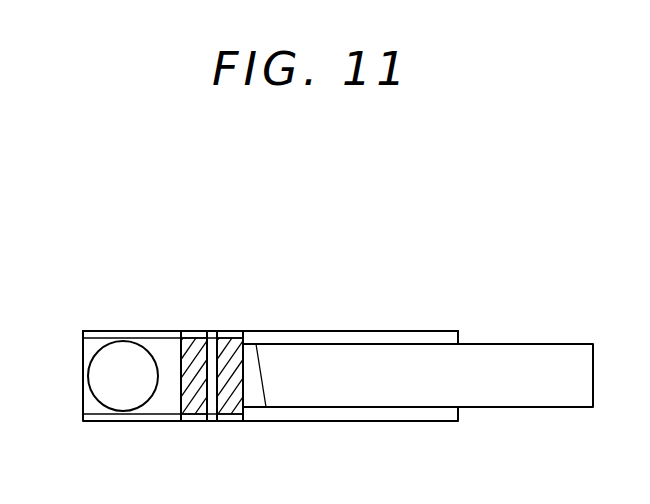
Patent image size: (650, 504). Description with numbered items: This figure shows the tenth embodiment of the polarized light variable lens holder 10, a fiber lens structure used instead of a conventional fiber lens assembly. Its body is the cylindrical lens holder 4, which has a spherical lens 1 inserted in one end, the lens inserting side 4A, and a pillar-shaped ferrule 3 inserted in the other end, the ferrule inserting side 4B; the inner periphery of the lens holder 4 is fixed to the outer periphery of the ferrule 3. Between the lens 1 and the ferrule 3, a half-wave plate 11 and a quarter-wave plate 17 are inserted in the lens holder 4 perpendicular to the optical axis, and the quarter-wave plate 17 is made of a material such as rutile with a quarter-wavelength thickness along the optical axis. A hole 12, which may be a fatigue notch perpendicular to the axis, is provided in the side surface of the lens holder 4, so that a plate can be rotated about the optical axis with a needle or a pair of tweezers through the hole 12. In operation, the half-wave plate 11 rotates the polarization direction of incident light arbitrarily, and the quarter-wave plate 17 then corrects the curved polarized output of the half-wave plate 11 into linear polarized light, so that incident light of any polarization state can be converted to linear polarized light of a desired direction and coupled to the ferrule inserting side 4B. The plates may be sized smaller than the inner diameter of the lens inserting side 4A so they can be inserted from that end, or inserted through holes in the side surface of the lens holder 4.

The polarized light variable lens holder 10 is at (288, 240).
The spherical lens 1 is at (112, 402).
The ferrule 3 is at (387, 402).
The lens holder 4 is at (328, 329).
The lens inserting side 4A is at (88, 330).
The ferrule inserting side 4B is at (437, 330).
The λ/2 plate 11 is at (192, 410).
The hole 12 is at (190, 330).
The λ/4 plate 17 is at (230, 408).